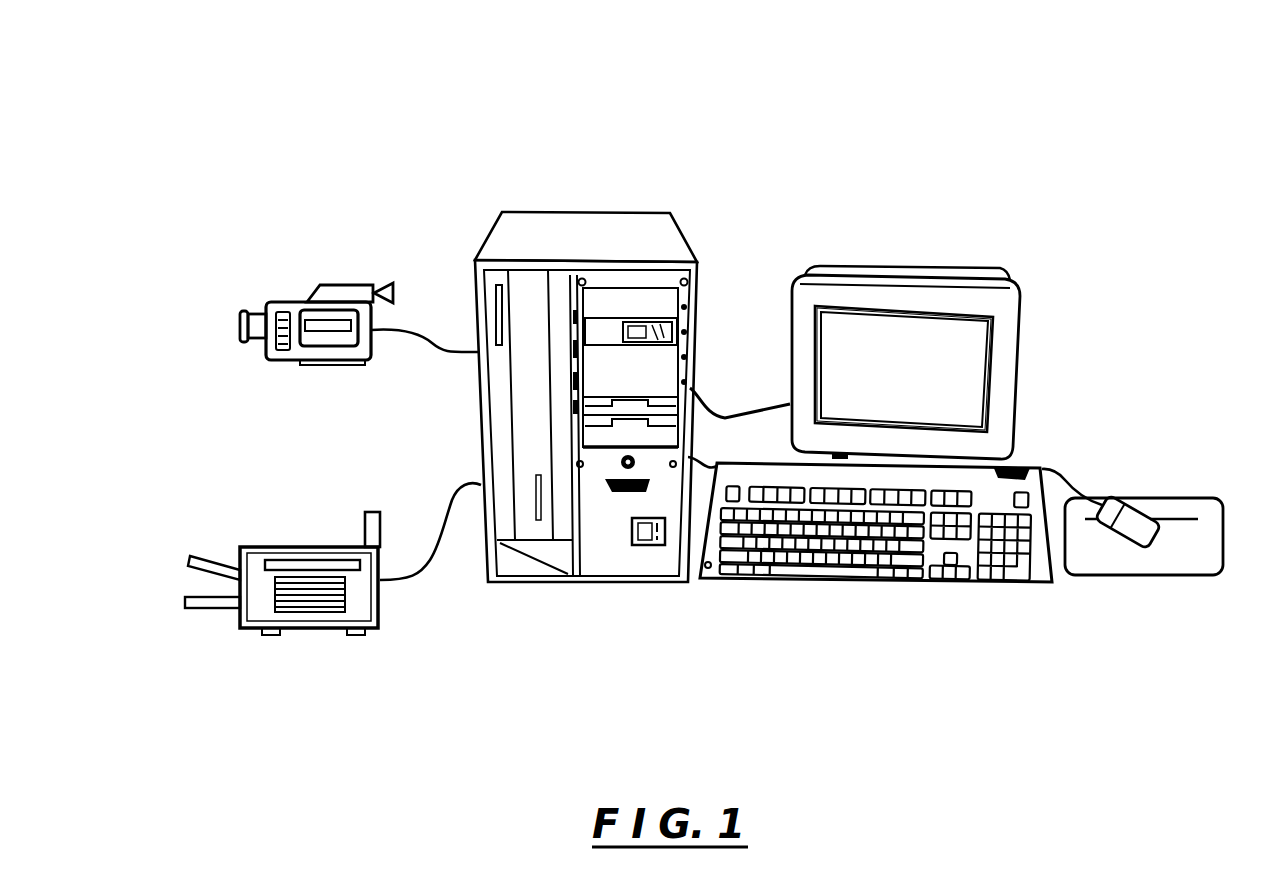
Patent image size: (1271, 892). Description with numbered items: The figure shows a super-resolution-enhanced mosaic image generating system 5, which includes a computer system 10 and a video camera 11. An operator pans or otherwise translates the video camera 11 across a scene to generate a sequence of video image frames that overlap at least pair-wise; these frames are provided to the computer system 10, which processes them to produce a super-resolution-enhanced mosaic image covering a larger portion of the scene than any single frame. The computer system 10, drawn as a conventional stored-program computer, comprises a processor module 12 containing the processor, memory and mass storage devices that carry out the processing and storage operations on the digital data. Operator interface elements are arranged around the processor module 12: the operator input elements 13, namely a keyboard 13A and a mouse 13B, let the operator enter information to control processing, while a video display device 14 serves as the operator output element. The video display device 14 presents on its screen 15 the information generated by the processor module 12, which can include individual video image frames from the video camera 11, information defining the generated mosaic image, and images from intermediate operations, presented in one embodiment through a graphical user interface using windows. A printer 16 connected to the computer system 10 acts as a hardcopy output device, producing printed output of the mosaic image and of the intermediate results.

The super-resolution-enhanced mosaic image generating system 5 is at (304, 128).
The computer system 10 is at (923, 150).
The video camera 11 is at (312, 368).
The processor module 12 is at (597, 211).
The operator input element(s) 13 is at (1052, 648).
The keyboard 13A is at (916, 589).
The mouse 13B is at (1202, 578).
The video display device 14 is at (1034, 371).
The screen 15 is at (830, 347).
The printer 16 is at (297, 632).